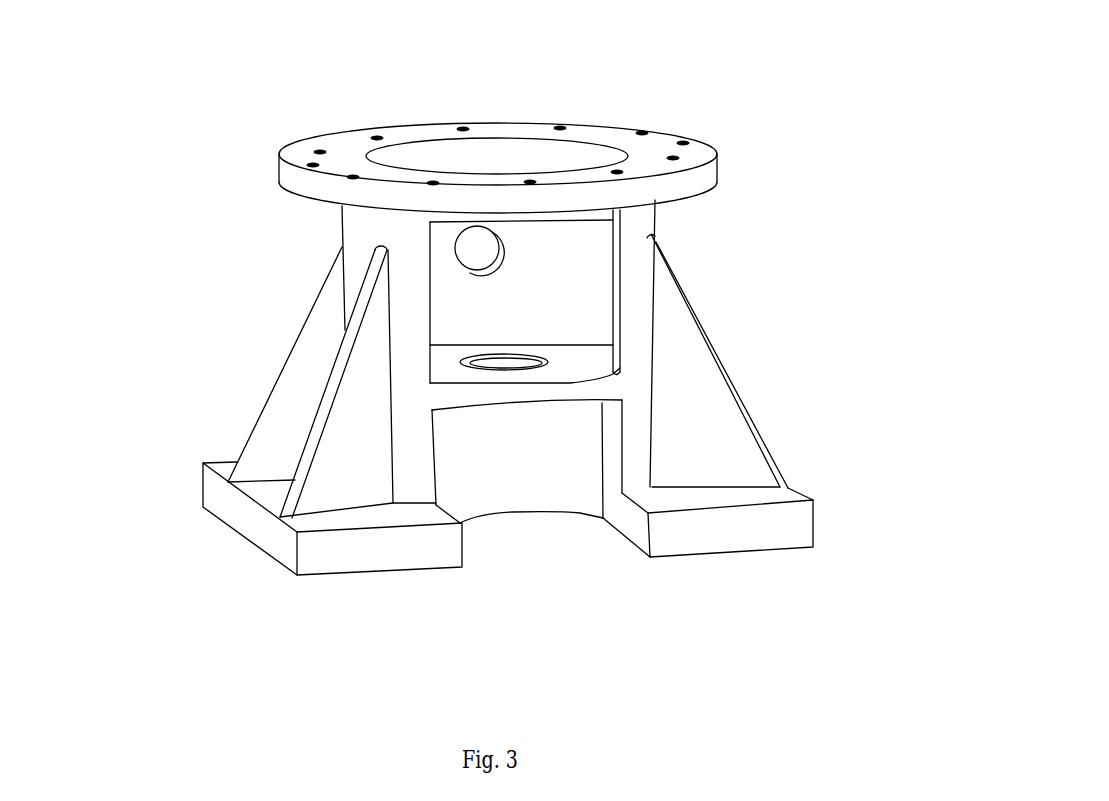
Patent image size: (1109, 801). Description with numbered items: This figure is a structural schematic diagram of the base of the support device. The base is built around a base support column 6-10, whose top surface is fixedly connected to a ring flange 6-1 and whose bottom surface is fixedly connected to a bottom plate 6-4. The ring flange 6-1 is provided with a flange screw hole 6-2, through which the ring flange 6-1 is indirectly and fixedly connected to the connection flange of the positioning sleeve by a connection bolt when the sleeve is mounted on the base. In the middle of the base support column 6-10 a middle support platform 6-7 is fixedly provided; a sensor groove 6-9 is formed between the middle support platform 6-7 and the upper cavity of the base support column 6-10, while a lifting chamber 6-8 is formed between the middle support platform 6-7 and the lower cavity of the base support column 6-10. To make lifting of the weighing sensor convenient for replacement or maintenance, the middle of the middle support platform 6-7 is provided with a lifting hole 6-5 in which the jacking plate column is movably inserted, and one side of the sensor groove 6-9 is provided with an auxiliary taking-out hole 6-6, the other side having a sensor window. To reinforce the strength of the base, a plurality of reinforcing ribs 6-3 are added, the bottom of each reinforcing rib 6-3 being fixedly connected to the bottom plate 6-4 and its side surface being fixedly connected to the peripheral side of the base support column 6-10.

The ring flange 6-1 is at (653, 147).
The flange screw hole 6-2 is at (303, 150).
The reinforcing rib 6-3 is at (680, 432).
The bottom plate 6-4 is at (732, 542).
The lifting hole 6-5 is at (465, 361).
The auxiliary taking-out hole 6-6 is at (473, 258).
The middle support platform 6-7 is at (474, 398).
The lifting chamber 6-8 is at (515, 470).
The sensor groove 6-9 is at (563, 287).
The base support column 6-10 is at (640, 214).